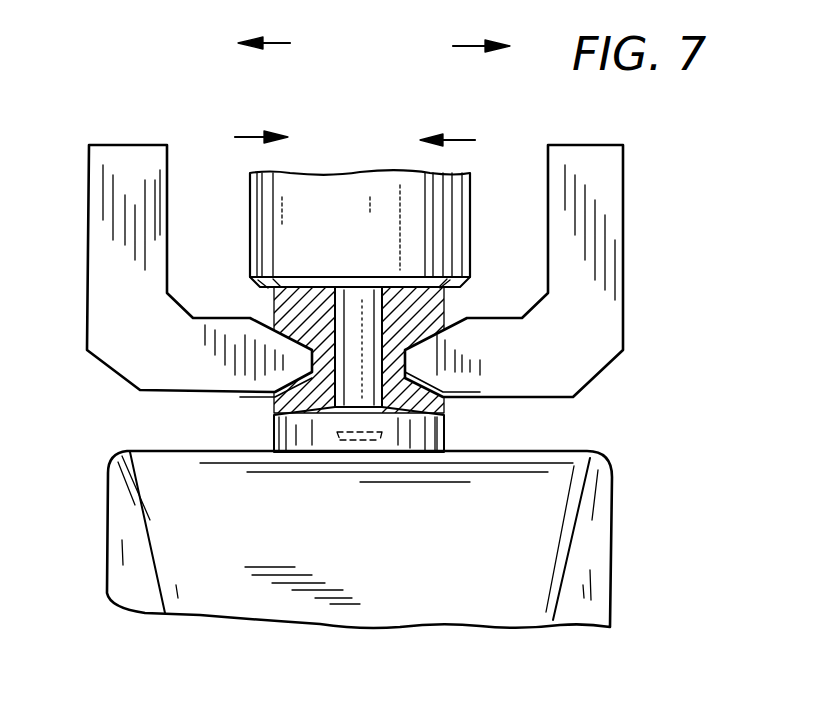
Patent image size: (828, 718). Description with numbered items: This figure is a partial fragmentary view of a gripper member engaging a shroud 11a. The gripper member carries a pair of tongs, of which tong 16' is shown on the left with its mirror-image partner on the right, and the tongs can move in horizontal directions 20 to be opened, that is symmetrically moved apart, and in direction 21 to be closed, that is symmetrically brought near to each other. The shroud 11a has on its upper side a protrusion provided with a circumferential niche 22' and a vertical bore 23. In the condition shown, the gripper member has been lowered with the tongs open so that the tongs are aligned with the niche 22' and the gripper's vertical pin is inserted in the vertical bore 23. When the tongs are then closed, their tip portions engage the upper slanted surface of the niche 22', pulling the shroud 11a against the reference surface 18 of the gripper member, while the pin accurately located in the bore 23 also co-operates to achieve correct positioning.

The shroud 11a is at (540, 470).
The tong 16' is at (181, 253).
The reference surface 18 is at (412, 283).
The horizontal direction 20 is at (292, 15).
The direction 21 is at (252, 138).
The circumferential niche 22' is at (338, 429).
The vertical bore 23 is at (443, 315).